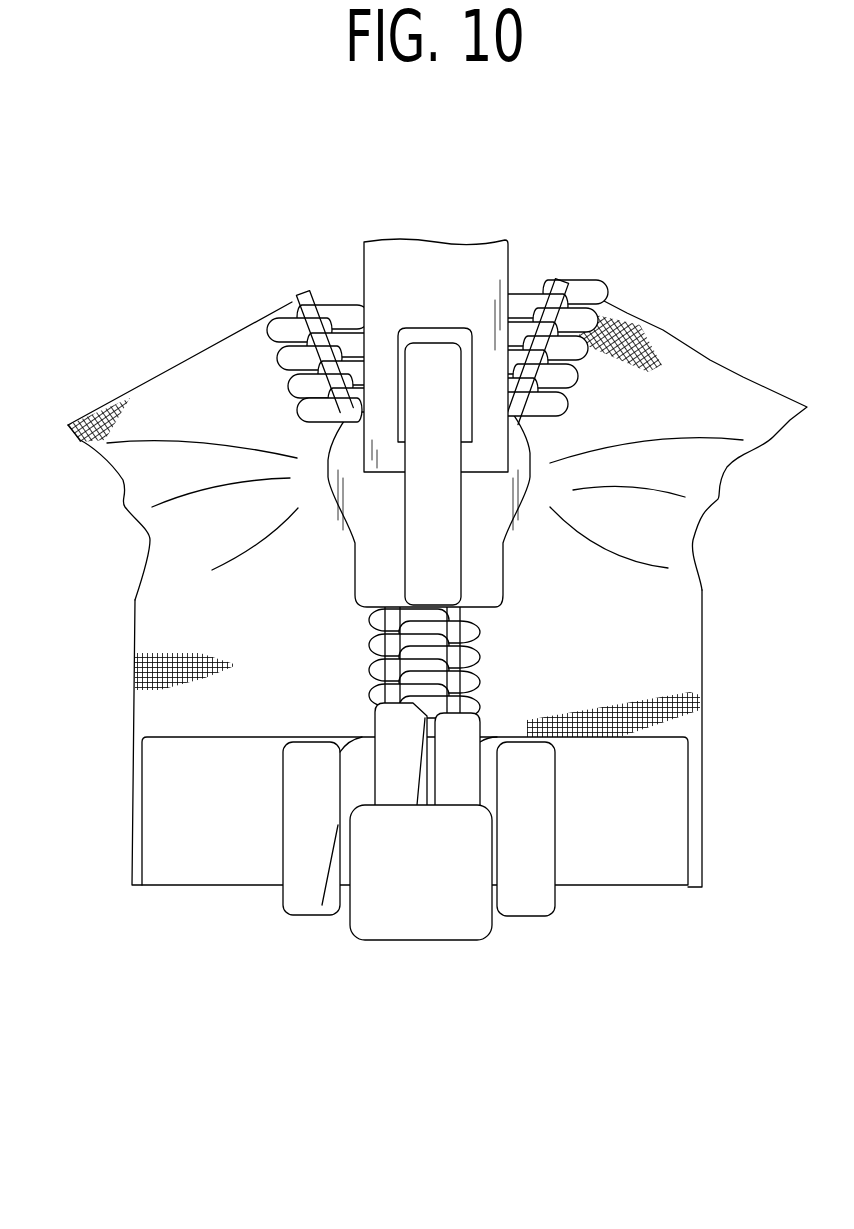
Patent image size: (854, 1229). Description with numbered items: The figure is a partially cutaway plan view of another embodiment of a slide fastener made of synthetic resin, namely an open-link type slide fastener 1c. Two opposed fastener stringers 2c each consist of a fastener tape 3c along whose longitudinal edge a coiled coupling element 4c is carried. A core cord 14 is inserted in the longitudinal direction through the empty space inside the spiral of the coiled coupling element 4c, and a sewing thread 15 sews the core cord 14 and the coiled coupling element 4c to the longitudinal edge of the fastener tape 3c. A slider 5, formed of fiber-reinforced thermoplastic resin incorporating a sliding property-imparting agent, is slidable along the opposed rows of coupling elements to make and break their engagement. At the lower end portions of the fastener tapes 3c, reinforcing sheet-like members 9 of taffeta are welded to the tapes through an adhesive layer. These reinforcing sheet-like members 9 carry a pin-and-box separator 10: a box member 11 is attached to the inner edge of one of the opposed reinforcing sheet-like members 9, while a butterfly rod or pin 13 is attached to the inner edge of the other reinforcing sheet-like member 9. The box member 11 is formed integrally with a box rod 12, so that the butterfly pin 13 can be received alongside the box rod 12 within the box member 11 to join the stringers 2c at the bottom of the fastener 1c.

The open-link type slide fastener 1c is at (427, 493).
The fastener stringer 2c is at (183, 353).
The fastener tape 3c is at (145, 640).
The coiled coupling element 4c is at (477, 638).
The slider 5 is at (458, 236).
The reinforcing sheet-like member 9 is at (155, 825).
The pin-and-box separator 10 is at (419, 865).
The box member 11 is at (430, 950).
The box rod 12 is at (463, 730).
The butterfly rod or pin 13 is at (385, 723).
The core cord 14 is at (583, 287).
The sewing thread 15 is at (316, 305).